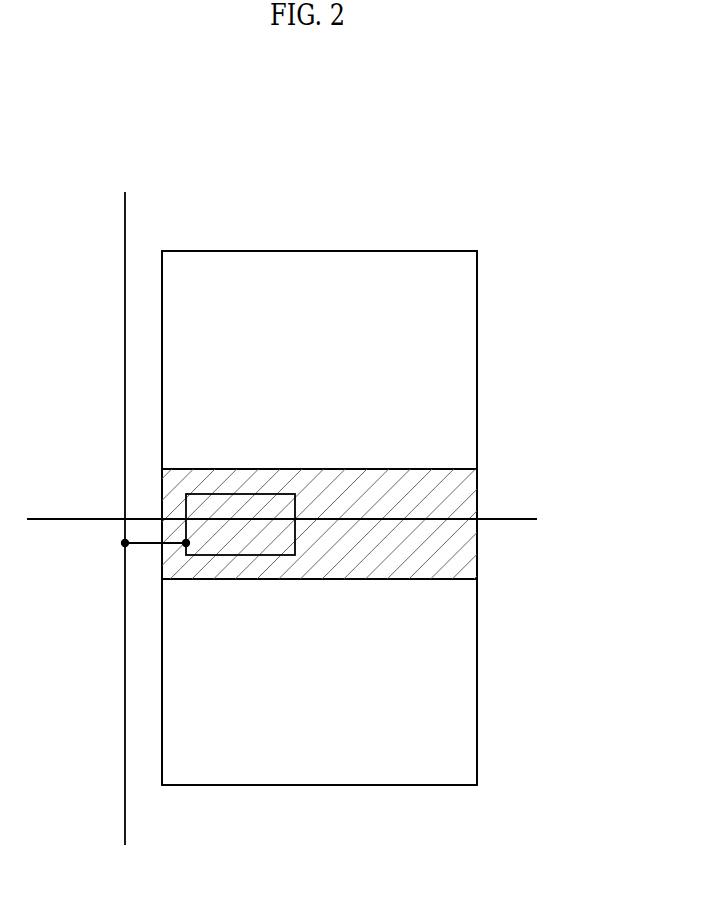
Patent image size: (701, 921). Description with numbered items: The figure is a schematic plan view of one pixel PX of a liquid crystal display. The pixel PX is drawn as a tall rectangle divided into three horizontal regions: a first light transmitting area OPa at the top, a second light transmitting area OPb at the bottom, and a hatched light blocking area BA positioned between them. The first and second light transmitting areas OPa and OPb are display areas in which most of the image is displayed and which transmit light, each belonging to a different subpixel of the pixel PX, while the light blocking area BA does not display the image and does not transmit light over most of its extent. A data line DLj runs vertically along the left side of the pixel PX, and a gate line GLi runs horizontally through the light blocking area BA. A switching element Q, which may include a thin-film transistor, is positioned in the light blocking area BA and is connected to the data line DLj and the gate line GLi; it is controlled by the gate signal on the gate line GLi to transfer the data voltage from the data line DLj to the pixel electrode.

The pixel PX is at (464, 214).
The first light transmitting area OPa is at (319, 360).
The second light transmitting area OPb is at (319, 682).
The light blocking area BA is at (438, 470).
The switching element Q is at (240, 555).
The gate line GLi is at (301, 520).
The data line DLj is at (125, 500).